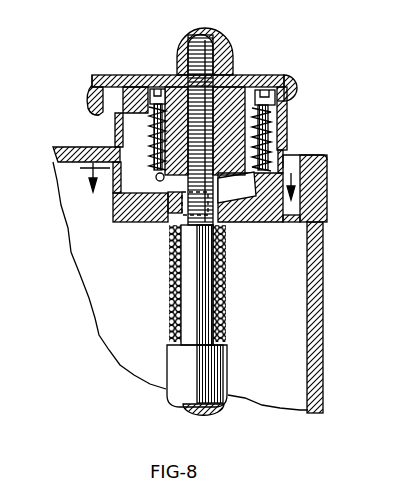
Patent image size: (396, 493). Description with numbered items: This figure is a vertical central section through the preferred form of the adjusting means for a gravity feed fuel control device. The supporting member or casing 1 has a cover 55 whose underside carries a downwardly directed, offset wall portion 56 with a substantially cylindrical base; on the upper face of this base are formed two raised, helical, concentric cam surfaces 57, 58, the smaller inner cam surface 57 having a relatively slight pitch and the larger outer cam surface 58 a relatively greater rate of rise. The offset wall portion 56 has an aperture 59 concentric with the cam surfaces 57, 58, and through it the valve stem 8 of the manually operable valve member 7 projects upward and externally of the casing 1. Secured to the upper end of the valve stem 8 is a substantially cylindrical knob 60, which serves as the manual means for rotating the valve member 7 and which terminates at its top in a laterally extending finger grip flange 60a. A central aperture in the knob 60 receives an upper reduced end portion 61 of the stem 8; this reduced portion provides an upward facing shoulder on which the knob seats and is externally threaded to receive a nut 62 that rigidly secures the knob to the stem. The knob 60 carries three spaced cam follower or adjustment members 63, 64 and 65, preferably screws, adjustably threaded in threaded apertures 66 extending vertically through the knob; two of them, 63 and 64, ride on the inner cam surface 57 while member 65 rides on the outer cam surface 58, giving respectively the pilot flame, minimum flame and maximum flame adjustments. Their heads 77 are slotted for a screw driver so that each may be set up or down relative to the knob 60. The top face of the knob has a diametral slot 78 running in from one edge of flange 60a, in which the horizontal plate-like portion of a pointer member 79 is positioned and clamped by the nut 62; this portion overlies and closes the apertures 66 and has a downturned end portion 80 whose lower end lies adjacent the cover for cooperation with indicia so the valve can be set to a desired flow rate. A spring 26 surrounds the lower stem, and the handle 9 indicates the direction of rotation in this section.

The casing 1 is at (323, 300).
The valve member 7 is at (227, 363).
The valve stem 8 is at (202, 300).
The handle 9 is at (293, 129).
The spring 26 is at (224, 310).
The cover 55 is at (330, 157).
The offset wall portion 56 is at (265, 222).
The inner cam surface 57 is at (240, 222).
The outer cam surface 58 is at (284, 222).
The aperture 59 is at (205, 224).
The knob 60 is at (238, 85).
The finger grip flange 60a is at (297, 93).
The upper reduced end portion 61 is at (178, 43).
The nut 62 is at (233, 44).
The pilot flame adjustment member 63 is at (156, 180).
The minimum flame adjustment member 64 is at (195, 204).
The maximum flame adjustment member 65 is at (237, 187).
The threaded apertures 66 is at (199, 139).
The heads 77 is at (150, 88).
The diametral slot 78 is at (297, 80).
The pointer member 79 is at (100, 74).
The downturned end portion 80 is at (84, 103).